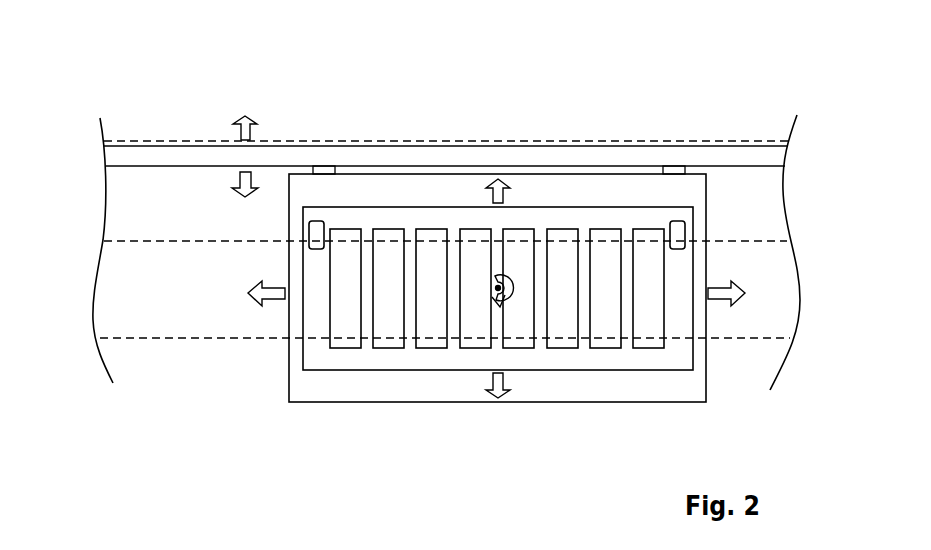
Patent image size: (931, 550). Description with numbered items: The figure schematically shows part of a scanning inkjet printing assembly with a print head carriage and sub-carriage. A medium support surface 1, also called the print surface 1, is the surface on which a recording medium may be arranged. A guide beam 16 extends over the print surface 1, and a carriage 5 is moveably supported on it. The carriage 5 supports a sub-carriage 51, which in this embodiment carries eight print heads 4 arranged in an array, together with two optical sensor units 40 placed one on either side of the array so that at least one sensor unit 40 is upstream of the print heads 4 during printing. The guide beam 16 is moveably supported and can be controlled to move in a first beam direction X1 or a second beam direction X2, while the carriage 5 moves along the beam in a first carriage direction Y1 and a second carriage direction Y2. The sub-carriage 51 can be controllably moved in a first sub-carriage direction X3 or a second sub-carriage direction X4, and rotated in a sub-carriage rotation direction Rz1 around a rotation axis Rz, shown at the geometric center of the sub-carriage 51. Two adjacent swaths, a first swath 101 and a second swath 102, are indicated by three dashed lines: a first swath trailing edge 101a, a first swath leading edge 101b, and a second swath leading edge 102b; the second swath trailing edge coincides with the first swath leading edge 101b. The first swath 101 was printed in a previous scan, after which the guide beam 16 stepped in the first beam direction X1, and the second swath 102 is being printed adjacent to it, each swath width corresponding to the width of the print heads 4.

The medium support surface 1 is at (194, 443).
The first swath 101 is at (179, 211).
The first swath trailing edge 101a is at (113, 138).
The first swath leading edge 101b is at (133, 240).
The second swath 102 is at (184, 305).
The second swath leading edge 102b is at (143, 337).
The guide beam 16 is at (585, 157).
The carriage 5 is at (330, 403).
The sub-carriage 51 is at (370, 370).
The print heads 4 is at (386, 255).
The optical sensor units 40 is at (309, 233).
The rotation axis Rz is at (497, 288).
The sub-carriage rotation direction Rz1 is at (508, 307).
The first beam direction X1 is at (238, 182).
The second beam direction X2 is at (252, 128).
The first sub-carriage direction X3 is at (503, 384).
The second sub-carriage direction X4 is at (503, 190).
The first carriage direction Y1 is at (273, 296).
The second carriage direction Y2 is at (722, 298).